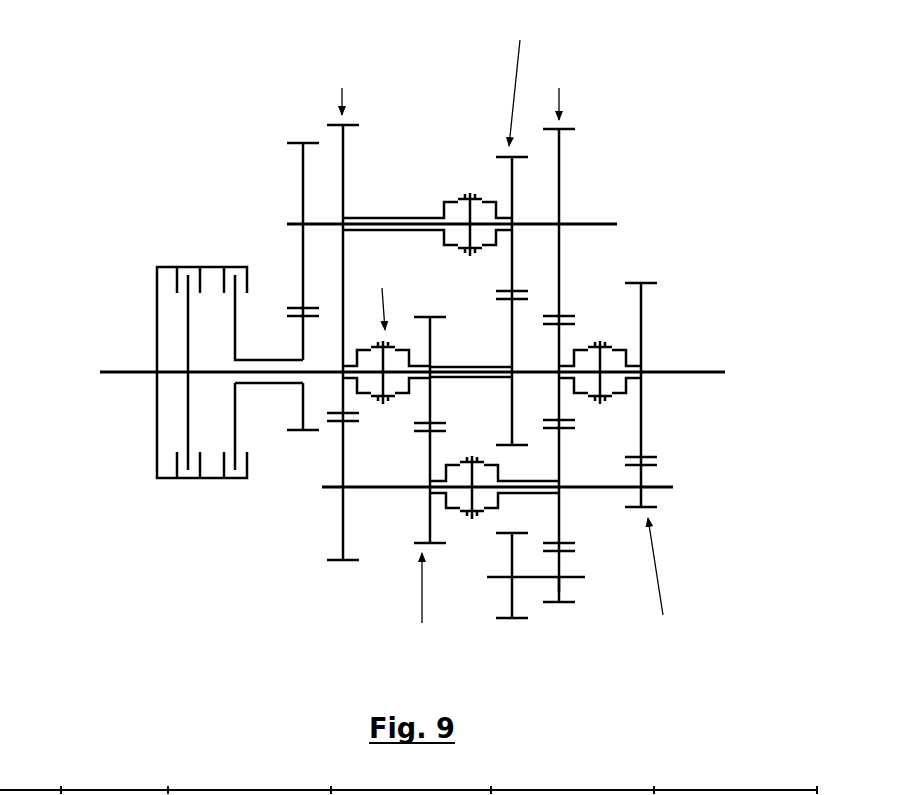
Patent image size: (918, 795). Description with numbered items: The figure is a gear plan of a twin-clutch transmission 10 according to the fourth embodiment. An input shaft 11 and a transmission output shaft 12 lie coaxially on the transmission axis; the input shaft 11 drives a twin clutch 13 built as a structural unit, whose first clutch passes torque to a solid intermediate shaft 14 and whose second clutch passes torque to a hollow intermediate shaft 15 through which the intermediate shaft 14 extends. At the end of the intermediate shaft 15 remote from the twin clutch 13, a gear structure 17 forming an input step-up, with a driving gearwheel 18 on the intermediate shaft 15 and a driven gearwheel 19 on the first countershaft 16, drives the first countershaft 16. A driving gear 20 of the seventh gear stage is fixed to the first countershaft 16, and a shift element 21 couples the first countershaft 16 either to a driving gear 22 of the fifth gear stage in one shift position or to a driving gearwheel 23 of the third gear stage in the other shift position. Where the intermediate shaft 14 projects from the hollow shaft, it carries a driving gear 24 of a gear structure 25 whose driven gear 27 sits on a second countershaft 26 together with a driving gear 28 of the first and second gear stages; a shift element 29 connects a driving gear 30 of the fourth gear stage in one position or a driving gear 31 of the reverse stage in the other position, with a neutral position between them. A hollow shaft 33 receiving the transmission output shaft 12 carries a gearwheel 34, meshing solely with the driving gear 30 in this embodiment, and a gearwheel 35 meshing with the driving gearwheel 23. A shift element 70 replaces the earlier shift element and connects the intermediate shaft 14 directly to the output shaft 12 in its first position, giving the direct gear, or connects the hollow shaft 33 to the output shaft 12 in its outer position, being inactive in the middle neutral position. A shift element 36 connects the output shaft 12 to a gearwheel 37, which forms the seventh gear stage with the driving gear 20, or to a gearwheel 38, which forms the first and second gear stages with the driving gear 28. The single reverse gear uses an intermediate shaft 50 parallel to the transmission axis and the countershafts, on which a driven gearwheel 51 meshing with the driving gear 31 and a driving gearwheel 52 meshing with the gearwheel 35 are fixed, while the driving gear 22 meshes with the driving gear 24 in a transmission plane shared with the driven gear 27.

The twin-clutch transmission 10 is at (590, 192).
The input shaft 11 is at (122, 375).
The transmission output shaft 12 is at (677, 368).
The twin clutch 13 is at (145, 464).
The intermediate shaft 14 is at (218, 375).
The intermediate shaft 15 is at (270, 385).
The first countershaft 16 is at (592, 222).
The gear structure 17 is at (296, 132).
The driving gearwheel 18 is at (302, 402).
The driven gearwheel 19 is at (302, 195).
The driving gear 20 is at (562, 165).
The shift element 21 is at (464, 184).
The driving gear 22 is at (343, 188).
The driving gearwheel 23 is at (510, 162).
The driving gear 24 is at (342, 347).
The gear structure 25 is at (336, 570).
The second countershaft 26 is at (665, 489).
The driven gear 27 is at (341, 512).
The driving gear 28 is at (643, 497).
The shift element 29 is at (467, 525).
The driving gear 30 is at (428, 502).
The driving gear 31 is at (562, 515).
The hollow shaft 33 is at (463, 378).
The gearwheel 34 is at (431, 348).
The gearwheel 35 is at (510, 320).
The shift element 36 is at (612, 407).
The gearwheel 37 is at (562, 398).
The gearwheel 38 is at (643, 313).
The intermediate shaft 50 is at (578, 578).
The driven gearwheel 51 is at (558, 592).
The driving gearwheel 52 is at (510, 595).
The shift element 70 is at (367, 408).